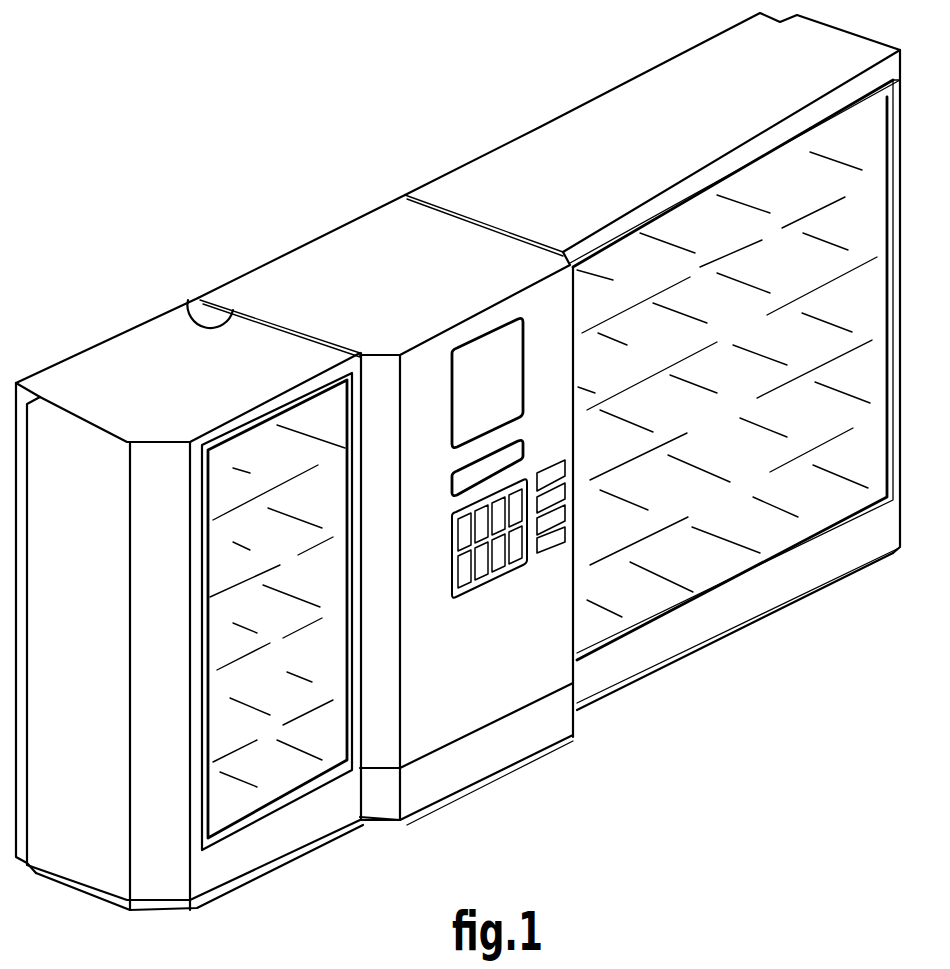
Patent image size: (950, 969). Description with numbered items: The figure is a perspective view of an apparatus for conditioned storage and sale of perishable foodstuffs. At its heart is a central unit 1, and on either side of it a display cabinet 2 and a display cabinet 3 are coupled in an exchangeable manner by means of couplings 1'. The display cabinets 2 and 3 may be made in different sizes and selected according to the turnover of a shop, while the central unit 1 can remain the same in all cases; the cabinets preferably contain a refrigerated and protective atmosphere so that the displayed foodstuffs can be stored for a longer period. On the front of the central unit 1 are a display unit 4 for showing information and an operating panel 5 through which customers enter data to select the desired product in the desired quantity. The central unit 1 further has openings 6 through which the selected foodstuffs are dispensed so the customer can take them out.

The central unit 1 is at (385, 486).
The couplings 1' is at (365, 218).
The display cabinet 2 is at (132, 370).
The display cabinet 3 is at (593, 150).
The display unit 4 is at (493, 397).
The operating panel 5 is at (482, 566).
The openings 6 is at (563, 470).